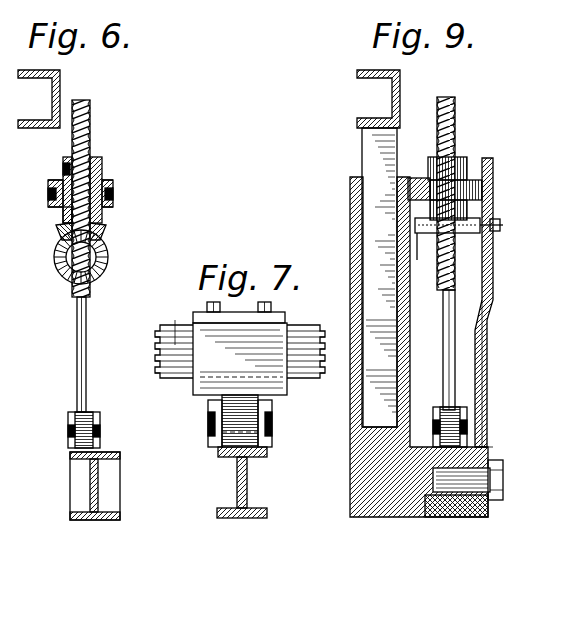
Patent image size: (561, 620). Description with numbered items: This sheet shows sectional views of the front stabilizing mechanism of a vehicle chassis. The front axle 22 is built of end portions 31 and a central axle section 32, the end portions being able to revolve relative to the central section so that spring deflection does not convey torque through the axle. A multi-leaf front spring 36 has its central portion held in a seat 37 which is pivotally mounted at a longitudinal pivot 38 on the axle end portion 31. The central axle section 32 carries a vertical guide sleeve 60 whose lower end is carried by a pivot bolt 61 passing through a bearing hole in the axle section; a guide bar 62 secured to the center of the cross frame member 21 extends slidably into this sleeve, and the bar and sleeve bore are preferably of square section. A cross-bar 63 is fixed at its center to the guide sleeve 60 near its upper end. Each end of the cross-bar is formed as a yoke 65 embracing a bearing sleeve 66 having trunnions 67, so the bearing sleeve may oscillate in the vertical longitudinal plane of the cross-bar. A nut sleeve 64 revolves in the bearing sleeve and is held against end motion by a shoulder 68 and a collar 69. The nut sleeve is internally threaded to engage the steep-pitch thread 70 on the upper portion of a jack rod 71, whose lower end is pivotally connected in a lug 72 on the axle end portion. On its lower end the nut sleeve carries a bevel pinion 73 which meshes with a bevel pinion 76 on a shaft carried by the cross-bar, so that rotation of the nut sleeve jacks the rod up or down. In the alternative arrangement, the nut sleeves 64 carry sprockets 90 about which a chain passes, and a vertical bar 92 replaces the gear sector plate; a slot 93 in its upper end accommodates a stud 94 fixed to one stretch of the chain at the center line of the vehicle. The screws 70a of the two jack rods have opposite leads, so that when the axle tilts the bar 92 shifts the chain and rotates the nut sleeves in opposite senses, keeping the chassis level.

In FIG. 6, the cross frame member 21 is at (60, 80).
In FIG. 9, the cross frame member 21 is at (392, 90).
In FIG. 6, the front axle 22 is at (93, 520).
In FIG. 7, the front axle 22 is at (243, 518).
In FIG. 6, the axle end portion 31 is at (80, 462).
In FIG. 9, the central axle section 32 is at (462, 517).
In FIG. 7, the front spring 36 is at (240, 330).
In FIG. 7, the spring seat 37 is at (218, 367).
In FIG. 7, the pivot 38 is at (210, 430).
In FIG. 9, the vertical guide sleeve 60 is at (350, 210).
In FIG. 9, the pivot bolt 61 is at (452, 492).
In FIG. 9, the guide bar 62 is at (362, 145).
In FIG. 9, the cross-bar 63 is at (415, 178).
In FIG. 6, the nut sleeve 64 is at (97, 165).
In FIG. 9, the nut sleeve 64 is at (430, 158).
In FIG. 6, the yoke 65 is at (108, 182).
In FIG. 6, the bearing sleeve 66 is at (101, 178).
In FIG. 6, the trunnion 67 is at (113, 195).
In FIG. 6, the shoulder 68 is at (62, 218).
In FIG. 9, the shoulder 68 is at (415, 228).
In FIG. 6, the collar 69 is at (63, 165).
In FIG. 9, the collar 69 is at (466, 185).
In FIG. 6, the thread 70 is at (88, 125).
In FIG. 9, the screw 70a is at (446, 97).
In FIG. 6, the jack rod 71 is at (86, 330).
In FIG. 9, the jack rod 71 is at (443, 360).
In FIG. 6, the lug 72 is at (96, 428).
In FIG. 9, the lug 72 is at (436, 415).
In FIG. 6, the pinion 73 is at (105, 232).
In FIG. 6, the bevel pinion 76 is at (108, 257).
In FIG. 9, the sprocket 90 is at (424, 254).
In FIG. 9, the vertical bar 92 is at (481, 340).
In FIG. 9, the slot 93 is at (488, 185).
In FIG. 9, the stud 94 is at (490, 232).